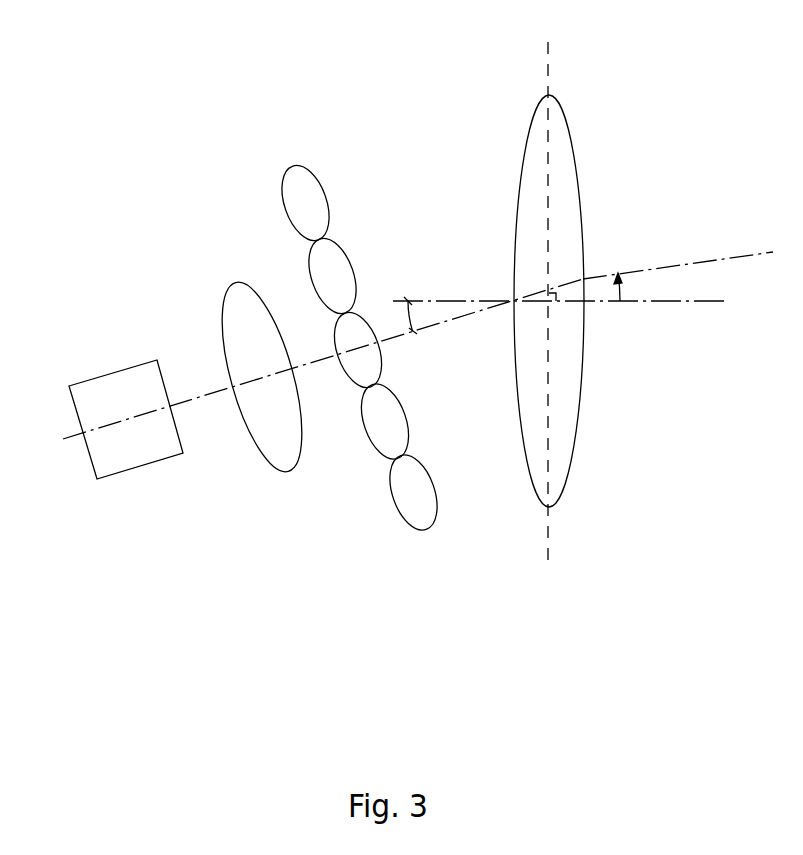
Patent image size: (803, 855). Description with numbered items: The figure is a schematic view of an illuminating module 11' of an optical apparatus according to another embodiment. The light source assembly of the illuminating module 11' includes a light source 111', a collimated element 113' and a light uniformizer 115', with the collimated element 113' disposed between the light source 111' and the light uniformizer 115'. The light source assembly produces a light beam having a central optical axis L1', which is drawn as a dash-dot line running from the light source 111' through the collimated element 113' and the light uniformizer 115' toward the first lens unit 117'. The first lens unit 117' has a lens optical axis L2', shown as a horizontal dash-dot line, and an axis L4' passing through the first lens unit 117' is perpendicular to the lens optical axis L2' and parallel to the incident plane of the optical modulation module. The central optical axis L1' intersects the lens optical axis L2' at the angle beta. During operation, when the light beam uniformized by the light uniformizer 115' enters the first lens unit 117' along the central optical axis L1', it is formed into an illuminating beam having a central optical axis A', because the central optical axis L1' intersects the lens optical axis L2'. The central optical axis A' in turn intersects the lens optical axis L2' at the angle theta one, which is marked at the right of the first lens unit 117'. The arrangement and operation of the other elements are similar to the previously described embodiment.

The illuminating module 11' is at (99, 25).
The light source 111' is at (126, 501).
The collimated element 113' is at (262, 450).
The light uniformizer 115' is at (359, 419).
The first lens unit 117' is at (538, 369).
The central optical axis L1' is at (301, 359).
The lens optical axis L2' is at (559, 375).
The axis L4' is at (607, 299).
The central optical axis A' is at (678, 213).